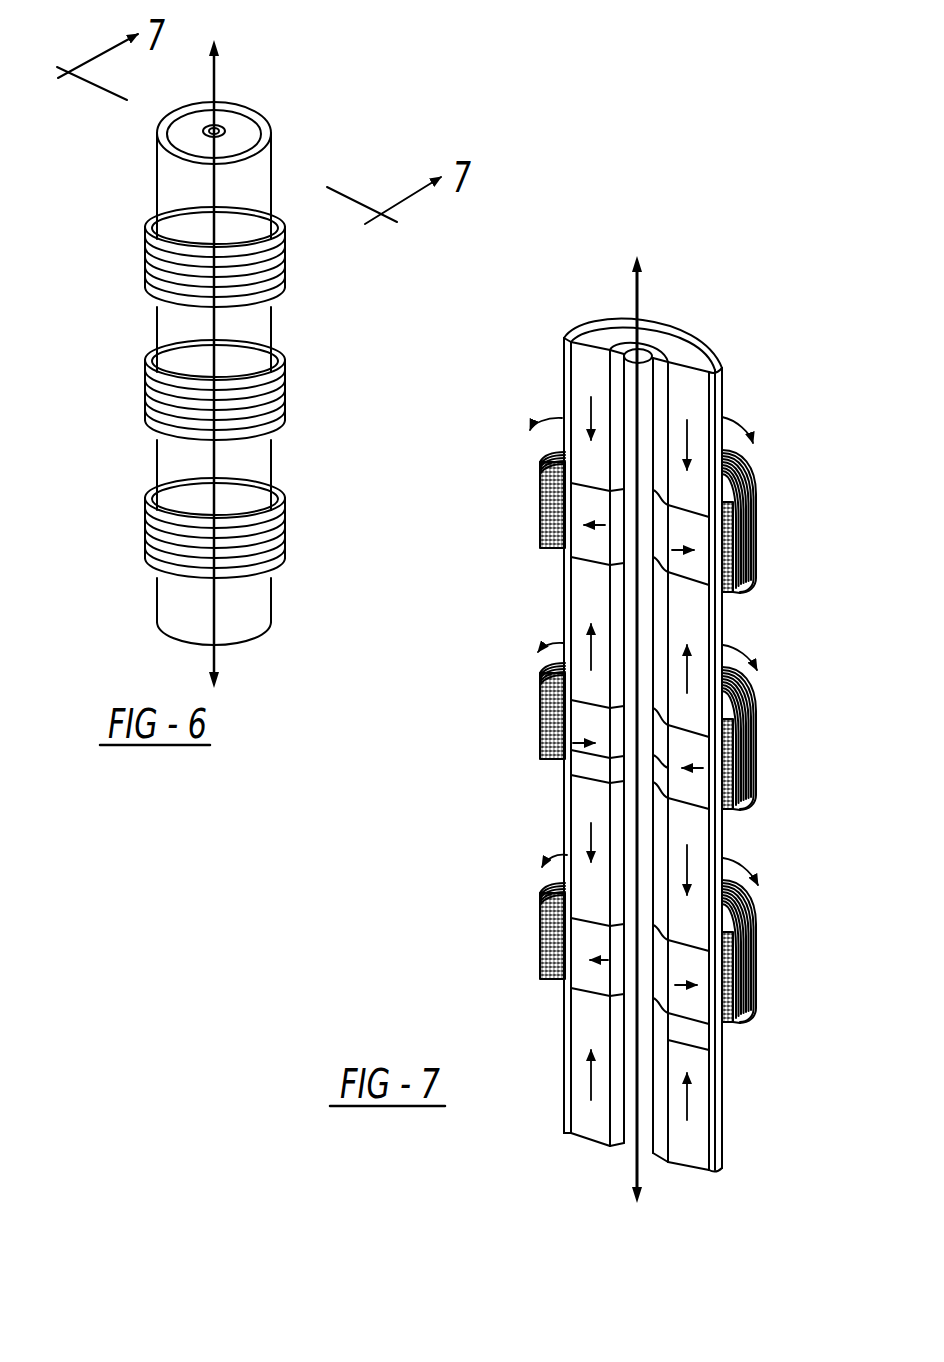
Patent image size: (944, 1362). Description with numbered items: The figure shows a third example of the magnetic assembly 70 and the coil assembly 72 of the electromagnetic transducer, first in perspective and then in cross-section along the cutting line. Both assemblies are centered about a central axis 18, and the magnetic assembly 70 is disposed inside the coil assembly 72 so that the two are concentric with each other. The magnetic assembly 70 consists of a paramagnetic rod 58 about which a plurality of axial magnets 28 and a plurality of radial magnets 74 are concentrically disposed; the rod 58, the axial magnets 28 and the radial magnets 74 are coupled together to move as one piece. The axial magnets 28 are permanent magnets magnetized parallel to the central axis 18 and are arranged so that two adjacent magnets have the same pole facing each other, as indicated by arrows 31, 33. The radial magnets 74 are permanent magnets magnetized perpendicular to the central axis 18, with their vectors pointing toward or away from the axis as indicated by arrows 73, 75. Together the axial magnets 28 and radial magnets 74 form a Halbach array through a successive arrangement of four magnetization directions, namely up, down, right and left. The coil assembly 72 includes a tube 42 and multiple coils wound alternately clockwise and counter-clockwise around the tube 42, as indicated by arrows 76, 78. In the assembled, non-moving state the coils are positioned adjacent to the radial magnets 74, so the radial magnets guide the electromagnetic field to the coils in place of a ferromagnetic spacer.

In FIG. 6, the central axis 18 is at (210, 335).
In FIG. 7, the central axis 18 is at (640, 601).
In FIG. 7, the axial magnets 28 is at (587, 1128).
In FIG. 7, the arrow 31 is at (592, 847).
In FIG. 7, the arrow 33 is at (585, 642).
In FIG. 7, the tube 42 is at (718, 1135).
In FIG. 6, the paramagnetic rod 58 is at (221, 129).
In FIG. 7, the paramagnetic rod 58 is at (637, 1137).
In FIG. 6, the magnetic assembly 70 is at (243, 128).
In FIG. 7, the magnetic assembly 70 is at (668, 338).
In FIG. 6, the coil assembly 72 is at (273, 163).
In FIG. 7, the coil assembly 72 is at (540, 994).
In FIG. 7, the arrow 73 is at (715, 606).
In FIG. 7, the radial magnets 74 is at (598, 760).
In FIG. 7, the arrow 75 is at (700, 763).
In FIG. 7, the arrow 76 is at (548, 418).
In FIG. 7, the arrow 78 is at (733, 653).